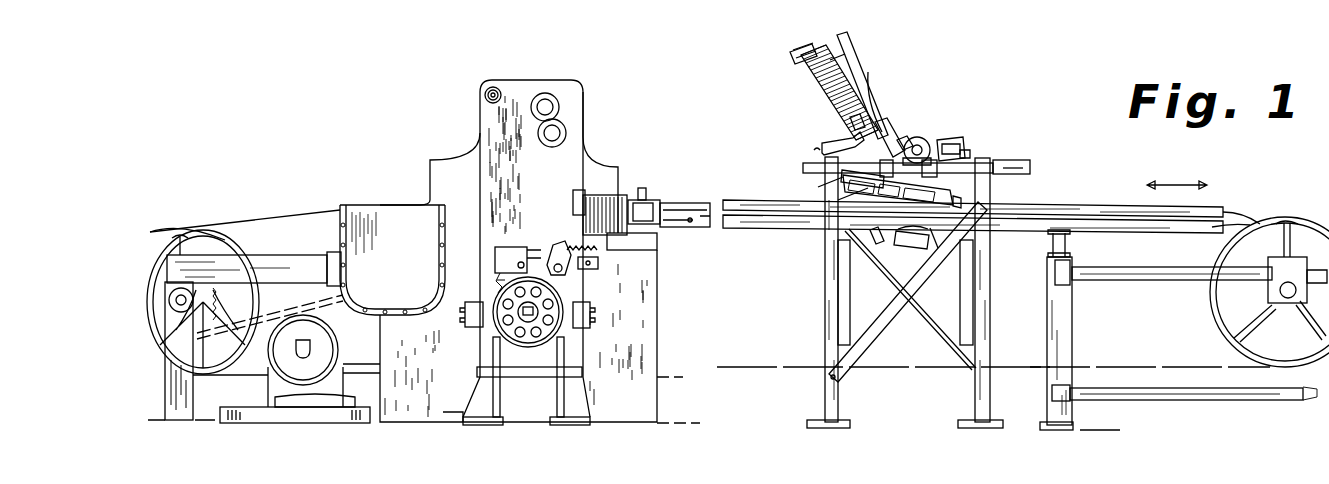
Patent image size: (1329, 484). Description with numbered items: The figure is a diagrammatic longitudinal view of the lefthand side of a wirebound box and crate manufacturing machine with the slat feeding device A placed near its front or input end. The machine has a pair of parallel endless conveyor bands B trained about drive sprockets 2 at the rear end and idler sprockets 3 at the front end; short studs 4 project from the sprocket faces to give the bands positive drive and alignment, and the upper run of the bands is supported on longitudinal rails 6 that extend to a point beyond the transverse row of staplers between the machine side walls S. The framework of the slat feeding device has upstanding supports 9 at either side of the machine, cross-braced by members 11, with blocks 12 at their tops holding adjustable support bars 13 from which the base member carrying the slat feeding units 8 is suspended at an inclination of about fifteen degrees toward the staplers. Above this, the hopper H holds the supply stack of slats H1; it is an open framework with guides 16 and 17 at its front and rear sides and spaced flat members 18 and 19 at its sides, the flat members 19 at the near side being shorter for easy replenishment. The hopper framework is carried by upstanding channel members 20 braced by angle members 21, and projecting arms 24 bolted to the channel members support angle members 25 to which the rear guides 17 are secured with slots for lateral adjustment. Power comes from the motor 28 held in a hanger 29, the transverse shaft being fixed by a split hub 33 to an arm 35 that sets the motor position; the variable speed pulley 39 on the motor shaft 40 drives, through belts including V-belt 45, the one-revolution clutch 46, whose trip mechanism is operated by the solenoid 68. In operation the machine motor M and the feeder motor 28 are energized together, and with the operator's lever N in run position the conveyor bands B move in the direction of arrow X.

The drive sprockets 2 is at (182, 234).
The idler sprockets 3 is at (1288, 224).
The studs 4 is at (228, 241).
The longitudinal rails 6 is at (735, 230).
The slat feeding units 8 is at (850, 202).
The upstanding supports 9 is at (825, 295).
The cross-brace members 11 is at (850, 305).
The blocks 12 is at (818, 184).
The support bars 13 is at (1003, 168).
The front guides 16 is at (867, 96).
The rear guides 17 is at (828, 86).
The flat members 18 is at (804, 46).
The flat members 19 is at (848, 120).
The upstanding channel members 20 is at (884, 124).
The angle members 21 is at (914, 140).
The projecting arms 24 is at (838, 138).
The angle members 25 is at (818, 150).
The motor 28 is at (905, 247).
The hanger 29 is at (938, 248).
The split hub 33 is at (963, 201).
The arm 35 is at (950, 184).
The variable speed pulley 39 is at (878, 246).
The motor shaft 40 is at (926, 330).
The V-belt 45 is at (900, 140).
The one-revolution clutch 46 is at (950, 140).
The solenoid 68 is at (970, 151).
The slat feeding device A is at (853, 52).
The conveyor bands B is at (284, 214).
The hopper H is at (847, 70).
The stack of slats H1 is at (802, 62).
The motor M is at (285, 374).
The operator's lever N is at (640, 198).
The machine side walls S is at (467, 72).
The arrow X is at (1168, 172).